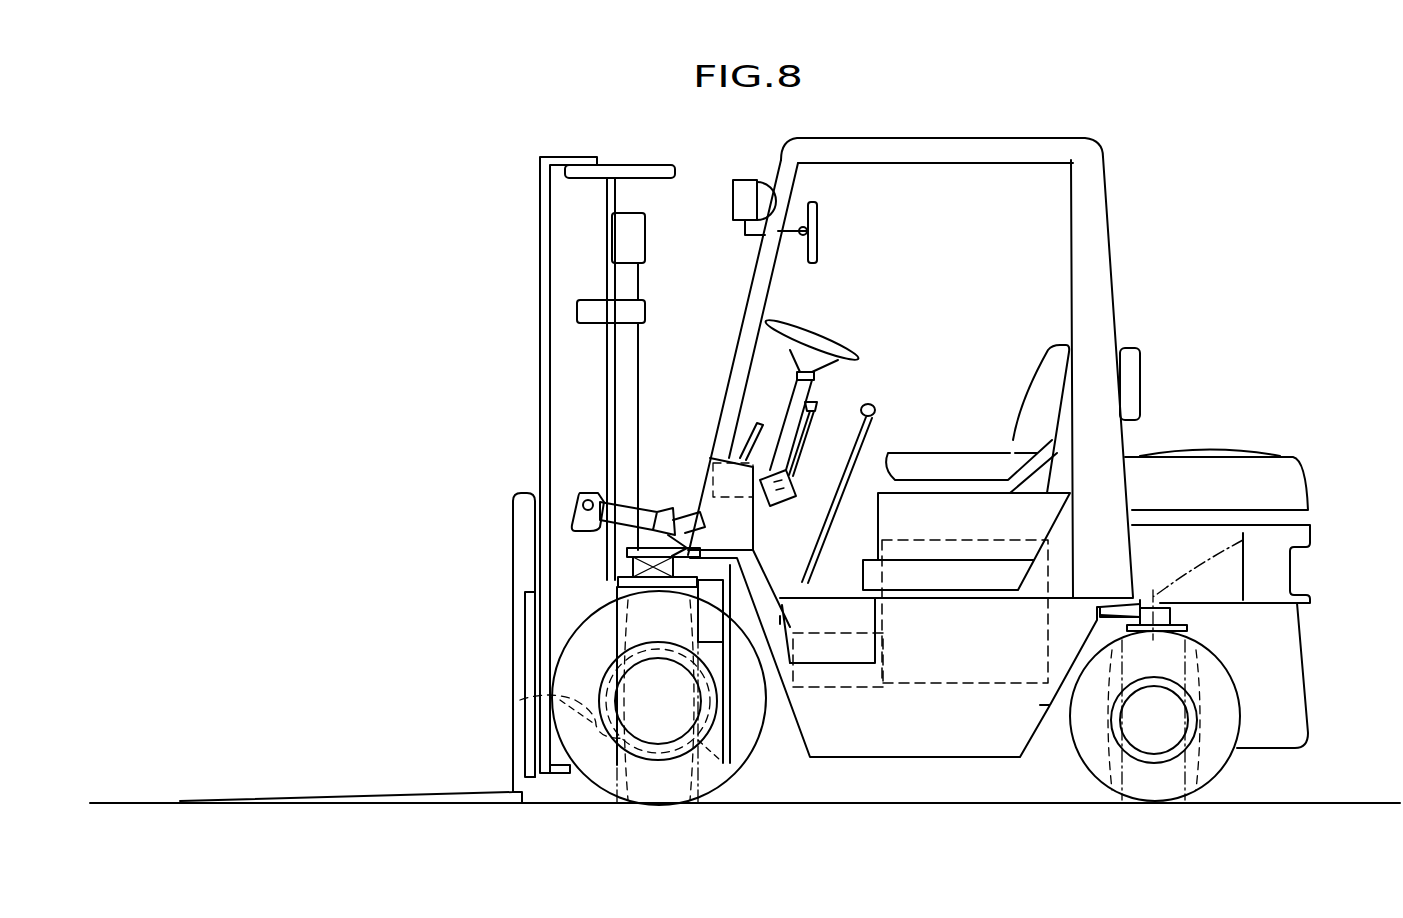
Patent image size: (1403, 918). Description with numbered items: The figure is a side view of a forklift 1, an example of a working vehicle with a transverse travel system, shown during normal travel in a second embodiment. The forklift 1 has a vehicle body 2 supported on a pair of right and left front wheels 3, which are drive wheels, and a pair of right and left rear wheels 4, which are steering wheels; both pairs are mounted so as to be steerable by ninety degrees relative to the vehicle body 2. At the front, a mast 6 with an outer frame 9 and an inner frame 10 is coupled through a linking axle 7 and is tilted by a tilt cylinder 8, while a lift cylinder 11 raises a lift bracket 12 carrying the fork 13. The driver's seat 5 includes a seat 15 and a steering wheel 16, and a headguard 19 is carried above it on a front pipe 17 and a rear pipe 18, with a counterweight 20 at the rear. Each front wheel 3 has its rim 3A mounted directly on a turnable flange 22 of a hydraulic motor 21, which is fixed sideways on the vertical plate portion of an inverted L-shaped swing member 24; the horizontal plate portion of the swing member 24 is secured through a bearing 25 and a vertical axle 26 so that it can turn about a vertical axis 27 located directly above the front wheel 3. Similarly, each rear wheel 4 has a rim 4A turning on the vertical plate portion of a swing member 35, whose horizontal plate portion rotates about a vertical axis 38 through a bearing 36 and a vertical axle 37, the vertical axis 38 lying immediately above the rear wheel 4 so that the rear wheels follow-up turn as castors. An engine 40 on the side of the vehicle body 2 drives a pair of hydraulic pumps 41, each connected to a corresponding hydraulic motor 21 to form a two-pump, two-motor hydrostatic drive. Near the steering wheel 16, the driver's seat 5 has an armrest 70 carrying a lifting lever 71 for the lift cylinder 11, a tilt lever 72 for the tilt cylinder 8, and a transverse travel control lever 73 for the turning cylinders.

The forklift 1 is at (1207, 270).
The vehicle body 2 is at (818, 745).
The front wheel 3 is at (645, 793).
The rim 3A is at (688, 795).
The rear wheel 4 is at (1103, 780).
The rim 4A is at (1147, 795).
The driver's seat 5 is at (911, 194).
The mast 6 is at (528, 328).
The linking axle 7 is at (520, 700).
The tilt cylinder 8 is at (676, 520).
The outer frame 9 is at (570, 412).
The inner frame 10 is at (545, 452).
The lift cylinder 11 is at (627, 352).
The lift bracket 12 is at (530, 622).
The fork 13 is at (400, 795).
The seat 15 is at (995, 460).
The steering wheel 16 is at (838, 345).
The front pipe 17 is at (760, 278).
The rear pipe 18 is at (1087, 275).
The headguard 19 is at (993, 145).
The counterweight 20 is at (1232, 478).
The hydraulic motor 21 is at (593, 807).
The turnable flange 22 is at (720, 760).
The swing member 24 is at (617, 580).
The bearing 25 is at (690, 520).
The vertical axle 26 is at (607, 555).
The vertical axis 27 is at (780, 620).
The swing member 35 is at (1187, 632).
The bearing 36 is at (1290, 577).
The vertical axle 37 is at (1140, 604).
The vertical axis 38 is at (1243, 540).
The engine 40 is at (947, 745).
The hydraulic pump 41 is at (850, 745).
The armrest 70 is at (793, 497).
The lifting lever 71 is at (820, 373).
The tilt lever 72 is at (791, 425).
The transverse travel control lever 73 is at (803, 440).